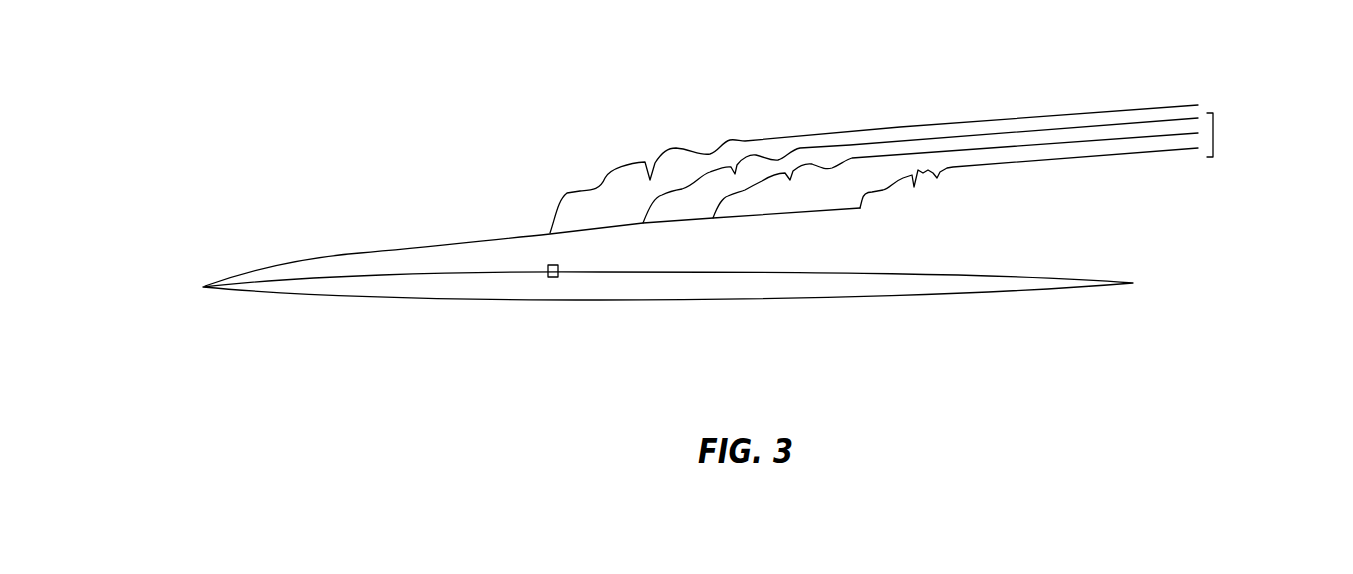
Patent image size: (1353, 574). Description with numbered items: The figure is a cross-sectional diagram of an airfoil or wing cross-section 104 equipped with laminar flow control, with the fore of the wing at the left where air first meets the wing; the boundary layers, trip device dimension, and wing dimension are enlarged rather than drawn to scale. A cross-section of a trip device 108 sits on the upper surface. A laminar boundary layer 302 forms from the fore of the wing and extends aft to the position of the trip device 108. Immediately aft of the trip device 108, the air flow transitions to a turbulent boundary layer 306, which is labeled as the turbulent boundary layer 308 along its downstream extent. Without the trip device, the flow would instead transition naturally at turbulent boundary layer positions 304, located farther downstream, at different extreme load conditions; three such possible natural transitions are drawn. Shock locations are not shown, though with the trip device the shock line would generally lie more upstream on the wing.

The airfoil or wing cross-section 104 is at (1128, 285).
The trip device 108 is at (558, 266).
The laminar boundary layer 302 is at (360, 253).
The natural turbulent boundary layer transition positions 304 is at (1213, 135).
The turbulent boundary layer 306 is at (900, 127).
The turbulent boundary layer 308 is at (1031, 184).